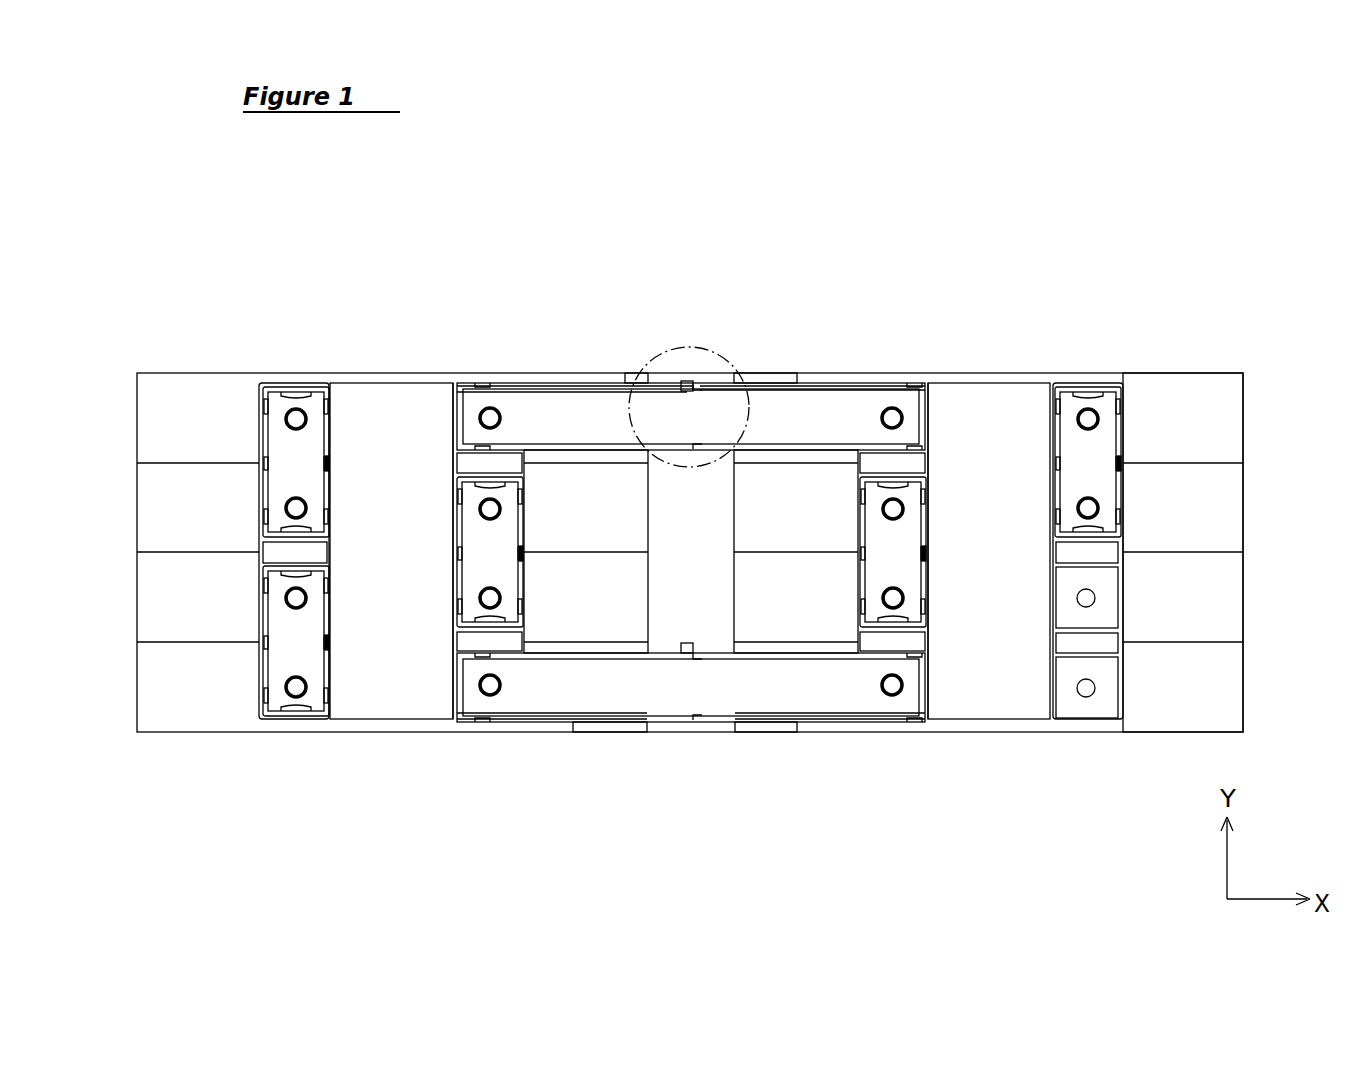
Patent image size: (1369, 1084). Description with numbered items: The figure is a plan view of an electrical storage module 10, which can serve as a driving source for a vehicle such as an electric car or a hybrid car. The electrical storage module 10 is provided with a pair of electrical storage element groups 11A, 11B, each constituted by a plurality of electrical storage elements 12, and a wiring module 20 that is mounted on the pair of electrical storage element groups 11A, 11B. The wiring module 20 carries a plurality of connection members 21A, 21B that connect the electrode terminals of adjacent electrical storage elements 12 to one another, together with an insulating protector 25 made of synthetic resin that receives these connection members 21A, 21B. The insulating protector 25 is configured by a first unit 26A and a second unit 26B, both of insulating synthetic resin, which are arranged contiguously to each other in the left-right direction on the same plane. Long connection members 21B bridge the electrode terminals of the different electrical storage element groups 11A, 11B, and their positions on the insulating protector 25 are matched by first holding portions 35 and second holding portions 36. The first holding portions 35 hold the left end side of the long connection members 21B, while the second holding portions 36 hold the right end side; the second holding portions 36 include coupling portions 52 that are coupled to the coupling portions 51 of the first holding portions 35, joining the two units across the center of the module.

The electrical storage module 10 is at (835, 233).
The electrical storage element group 11A is at (300, 356).
The electrical storage element group 11B is at (978, 346).
The electrical storage element 12 is at (167, 430).
The wiring module 20 is at (1145, 419).
The connection member 21A is at (305, 433).
The long connection member 21B is at (581, 402).
The insulating protector 25 is at (685, 630).
The first unit 26A is at (603, 742).
The second unit 26B is at (754, 607).
The first holding portion 35 is at (632, 395).
The second holding portion 36 is at (781, 396).
The coupling portion 51 is at (691, 384).
The coupling portion 52 is at (699, 386).